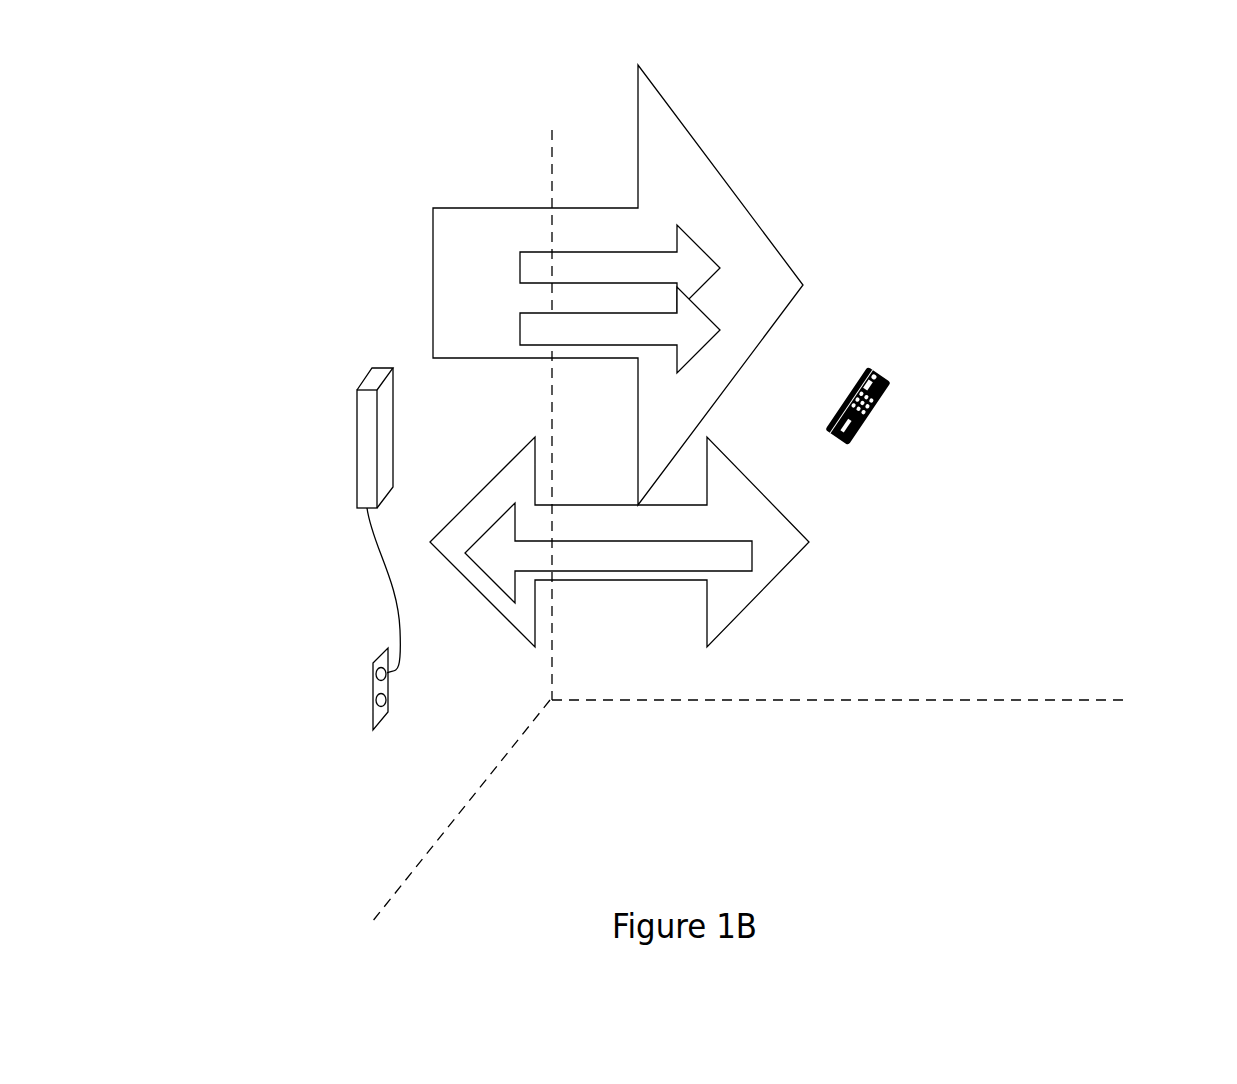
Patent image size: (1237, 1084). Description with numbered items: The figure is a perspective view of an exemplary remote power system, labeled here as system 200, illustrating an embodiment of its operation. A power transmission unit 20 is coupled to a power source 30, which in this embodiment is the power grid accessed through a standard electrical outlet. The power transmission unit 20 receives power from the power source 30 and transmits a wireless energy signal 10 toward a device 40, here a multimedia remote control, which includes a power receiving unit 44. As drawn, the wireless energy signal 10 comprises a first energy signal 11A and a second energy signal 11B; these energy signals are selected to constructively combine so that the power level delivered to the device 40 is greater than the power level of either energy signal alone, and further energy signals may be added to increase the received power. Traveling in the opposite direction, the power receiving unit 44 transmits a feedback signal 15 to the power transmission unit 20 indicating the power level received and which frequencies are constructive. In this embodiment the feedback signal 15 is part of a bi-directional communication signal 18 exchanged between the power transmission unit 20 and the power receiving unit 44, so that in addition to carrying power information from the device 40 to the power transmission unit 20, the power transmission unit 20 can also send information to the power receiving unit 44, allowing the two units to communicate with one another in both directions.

The wireless energy signal 10 is at (499, 208).
The first energy signal 11A is at (685, 250).
The second energy signal 11B is at (698, 333).
The feedback signal 15 is at (732, 552).
The bi-directional communication signal 18 is at (782, 537).
The power transmission unit 20 is at (378, 365).
The power source 30 is at (370, 697).
The device 40 is at (855, 273).
The power receiving unit 44 is at (887, 407).
The wireless energy transfer system 200 is at (1045, 148).